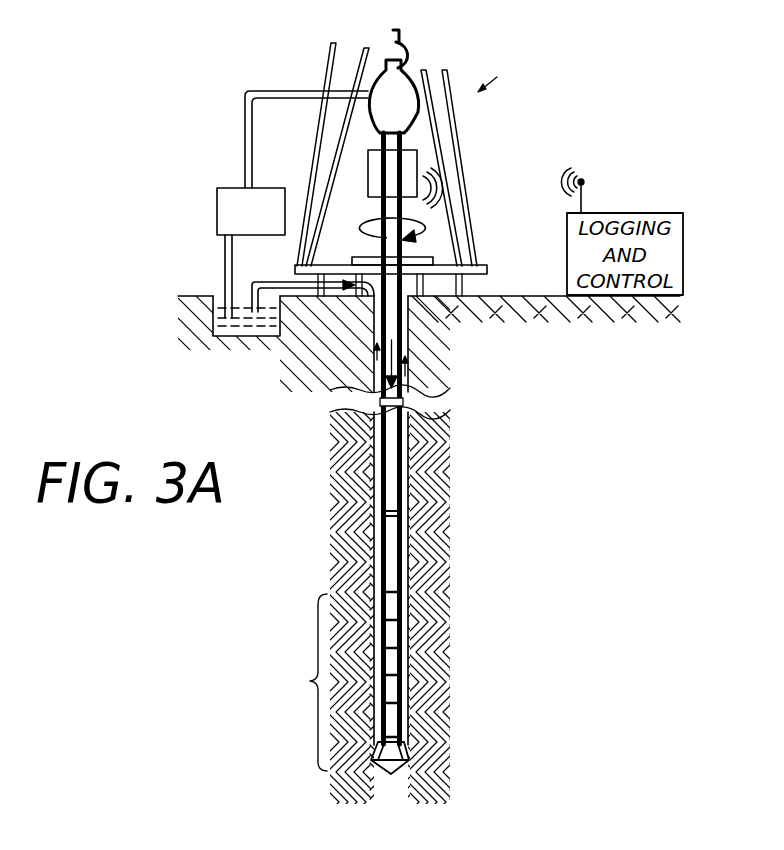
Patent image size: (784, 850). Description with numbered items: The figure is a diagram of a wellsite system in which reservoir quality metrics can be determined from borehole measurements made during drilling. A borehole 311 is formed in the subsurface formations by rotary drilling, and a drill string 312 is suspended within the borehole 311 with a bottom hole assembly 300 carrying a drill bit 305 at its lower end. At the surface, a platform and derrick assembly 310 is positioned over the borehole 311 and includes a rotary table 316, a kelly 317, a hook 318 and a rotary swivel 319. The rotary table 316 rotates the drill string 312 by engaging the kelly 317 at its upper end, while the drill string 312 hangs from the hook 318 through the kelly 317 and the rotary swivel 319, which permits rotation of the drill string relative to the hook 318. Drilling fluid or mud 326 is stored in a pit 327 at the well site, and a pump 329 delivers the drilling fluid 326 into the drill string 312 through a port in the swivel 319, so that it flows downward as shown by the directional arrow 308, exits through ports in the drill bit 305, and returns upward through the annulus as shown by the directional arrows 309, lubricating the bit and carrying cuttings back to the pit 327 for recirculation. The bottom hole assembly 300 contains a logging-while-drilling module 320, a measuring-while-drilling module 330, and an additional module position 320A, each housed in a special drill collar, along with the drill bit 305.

The bottom hole assembly 300 is at (297, 682).
The drill bit 305 is at (400, 762).
The directional arrow 308 is at (373, 386).
The directional arrows 309 is at (410, 378).
The platform and derrick assembly 310 is at (516, 79).
The borehole 311 is at (412, 333).
The drill string 312 is at (391, 450).
The rotary table 316 is at (425, 264).
The kelly 317 is at (393, 247).
The hook 318 is at (392, 35).
The rotary swivel 319 is at (399, 72).
The logging-while-drilling (LWD) module 320 is at (397, 632).
The additional LWD and/or MWD module 320A is at (395, 687).
The drilling fluid or mud 326 is at (257, 334).
The pit 327 is at (208, 322).
The pump 329 is at (234, 190).
The measuring-while-drilling (MWD) module 330 is at (395, 660).